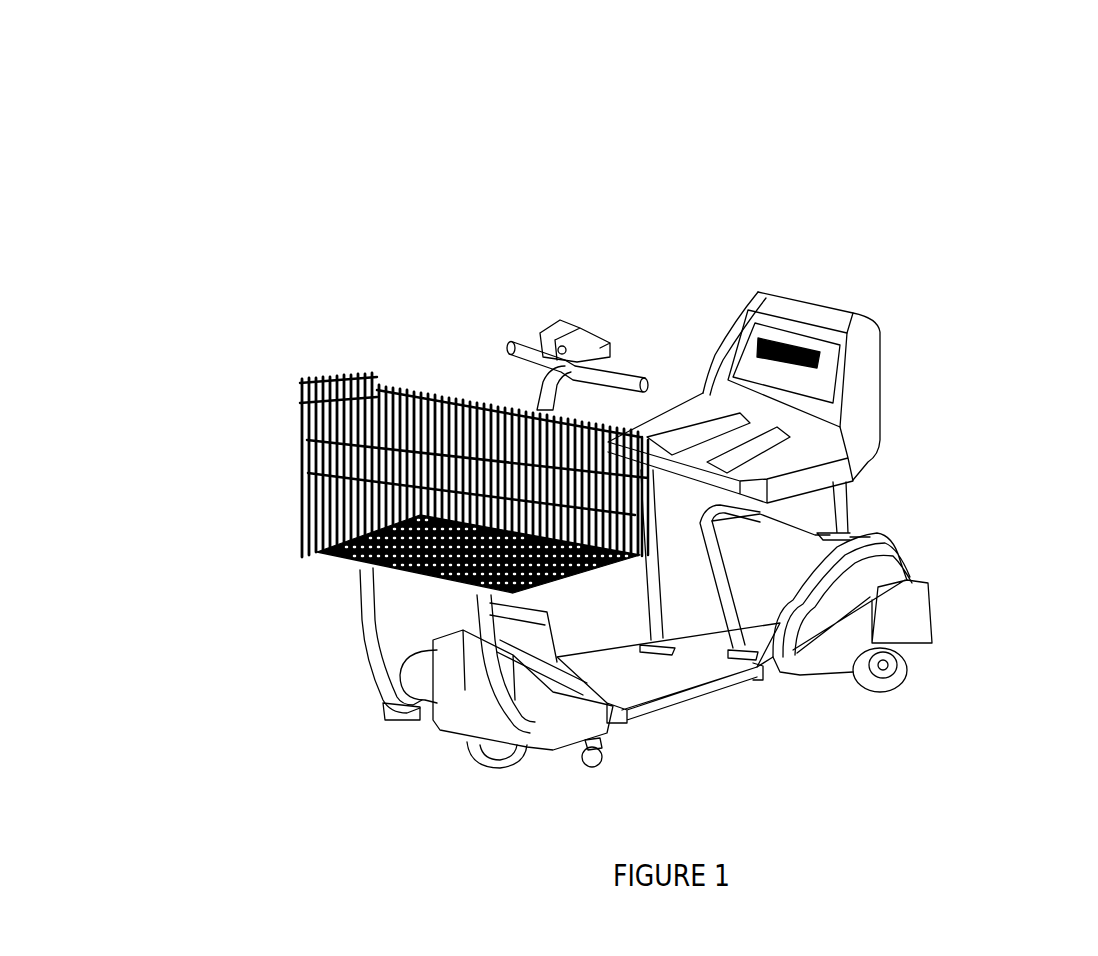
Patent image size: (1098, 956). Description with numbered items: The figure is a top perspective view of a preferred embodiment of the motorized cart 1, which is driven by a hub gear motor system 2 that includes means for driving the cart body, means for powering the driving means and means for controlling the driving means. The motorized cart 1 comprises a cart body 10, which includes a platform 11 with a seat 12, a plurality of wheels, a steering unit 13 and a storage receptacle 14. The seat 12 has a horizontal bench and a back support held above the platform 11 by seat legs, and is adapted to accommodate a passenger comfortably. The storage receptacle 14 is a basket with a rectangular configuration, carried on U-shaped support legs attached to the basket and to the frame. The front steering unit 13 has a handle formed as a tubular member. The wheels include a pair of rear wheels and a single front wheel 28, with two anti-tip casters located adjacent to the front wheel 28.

The motorized cart 1 is at (405, 200).
The hub gear motor system 2 is at (504, 775).
The cart body 10 is at (890, 489).
The platform 11 is at (722, 702).
The seat 12 is at (893, 372).
The steering unit 13 is at (525, 373).
The storage receptacle 14 is at (312, 488).
The front wheel 28 is at (468, 745).